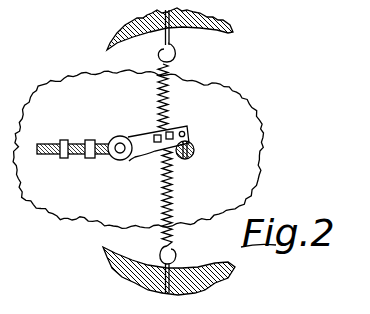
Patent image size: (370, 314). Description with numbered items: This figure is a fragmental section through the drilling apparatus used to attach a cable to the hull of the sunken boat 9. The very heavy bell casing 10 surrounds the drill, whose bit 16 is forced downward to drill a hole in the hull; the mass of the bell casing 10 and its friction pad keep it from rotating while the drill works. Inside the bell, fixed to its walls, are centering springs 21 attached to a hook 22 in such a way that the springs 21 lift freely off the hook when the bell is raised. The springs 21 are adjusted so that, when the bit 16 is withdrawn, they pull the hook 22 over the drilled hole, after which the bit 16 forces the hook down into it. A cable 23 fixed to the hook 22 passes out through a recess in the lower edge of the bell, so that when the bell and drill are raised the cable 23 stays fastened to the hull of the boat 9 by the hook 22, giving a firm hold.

The bell casing 10 is at (233, 27).
The centering springs 21 is at (157, 100).
The cable 23 is at (73, 142).
The hook 22 is at (144, 155).
The bit 16 is at (195, 149).
The boat 9 is at (55, 207).